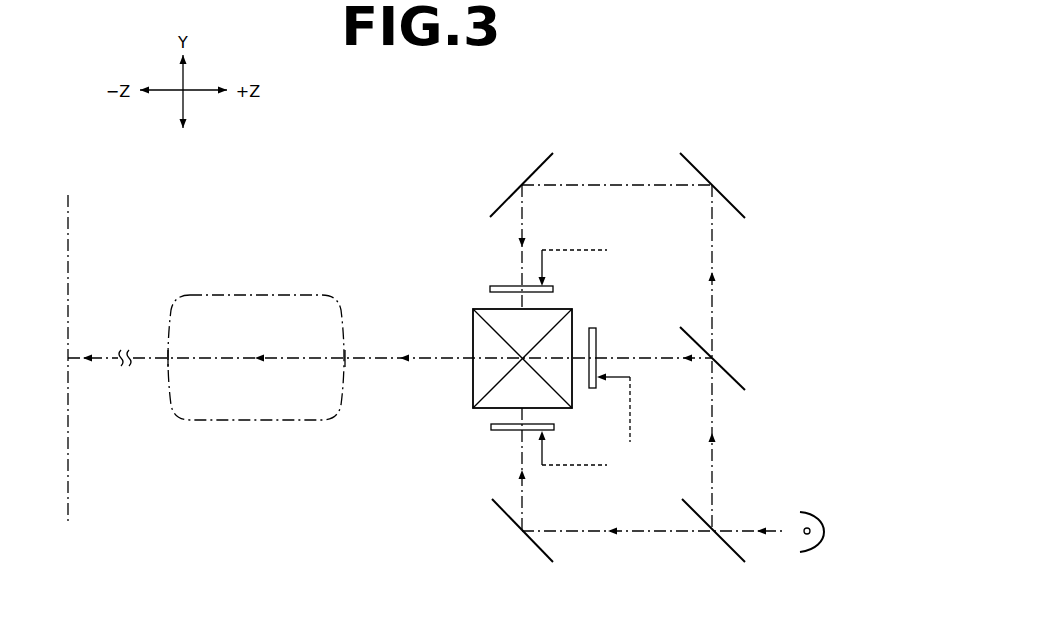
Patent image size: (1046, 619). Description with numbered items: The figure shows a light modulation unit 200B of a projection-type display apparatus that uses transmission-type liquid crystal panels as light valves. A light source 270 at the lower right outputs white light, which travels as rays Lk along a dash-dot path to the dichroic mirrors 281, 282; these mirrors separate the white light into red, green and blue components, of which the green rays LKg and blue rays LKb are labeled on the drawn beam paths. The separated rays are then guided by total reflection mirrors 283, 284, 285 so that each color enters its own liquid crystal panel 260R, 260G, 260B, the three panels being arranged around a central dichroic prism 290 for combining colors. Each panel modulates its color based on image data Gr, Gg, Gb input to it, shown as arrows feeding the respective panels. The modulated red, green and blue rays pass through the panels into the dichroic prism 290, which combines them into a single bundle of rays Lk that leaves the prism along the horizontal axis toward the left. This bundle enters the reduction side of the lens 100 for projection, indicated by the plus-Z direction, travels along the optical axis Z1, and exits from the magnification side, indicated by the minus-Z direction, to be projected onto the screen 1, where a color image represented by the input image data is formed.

The screen 1 is at (68, 240).
The lens for projection 100 is at (230, 291).
The optical axis Z1 is at (150, 356).
The rays of light LK is at (420, 352).
The green rays of light LKg is at (650, 353).
The blue rays of light LKb is at (628, 534).
The image data Gr is at (544, 250).
The image data Gg is at (632, 385).
The image data Gb is at (547, 467).
The light modulation unit 200B is at (765, 90).
The liquid crystal panel 260R is at (490, 288).
The liquid crystal panel 260G is at (592, 326).
The liquid crystal panel 260B is at (498, 432).
The light source 270 is at (814, 507).
The dichroic mirror 281 is at (735, 556).
The dichroic mirror 282 is at (735, 375).
The total reflection mirror 283 is at (545, 553).
The total reflection mirror 284 is at (733, 203).
The total reflection mirror 285 is at (500, 206).
The dichroic prism 290 is at (478, 380).